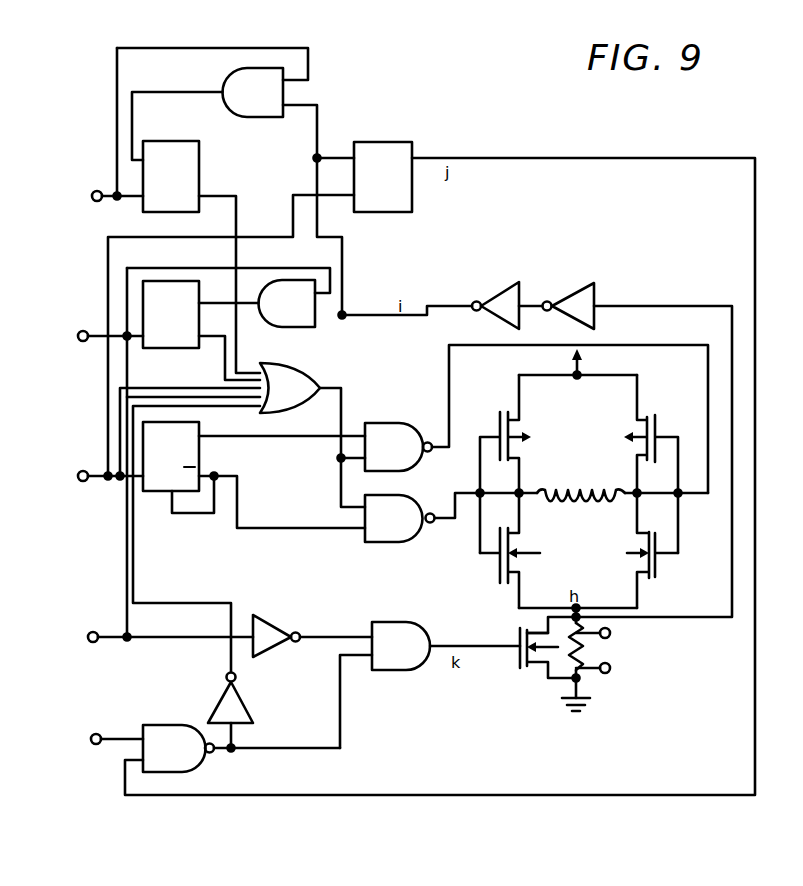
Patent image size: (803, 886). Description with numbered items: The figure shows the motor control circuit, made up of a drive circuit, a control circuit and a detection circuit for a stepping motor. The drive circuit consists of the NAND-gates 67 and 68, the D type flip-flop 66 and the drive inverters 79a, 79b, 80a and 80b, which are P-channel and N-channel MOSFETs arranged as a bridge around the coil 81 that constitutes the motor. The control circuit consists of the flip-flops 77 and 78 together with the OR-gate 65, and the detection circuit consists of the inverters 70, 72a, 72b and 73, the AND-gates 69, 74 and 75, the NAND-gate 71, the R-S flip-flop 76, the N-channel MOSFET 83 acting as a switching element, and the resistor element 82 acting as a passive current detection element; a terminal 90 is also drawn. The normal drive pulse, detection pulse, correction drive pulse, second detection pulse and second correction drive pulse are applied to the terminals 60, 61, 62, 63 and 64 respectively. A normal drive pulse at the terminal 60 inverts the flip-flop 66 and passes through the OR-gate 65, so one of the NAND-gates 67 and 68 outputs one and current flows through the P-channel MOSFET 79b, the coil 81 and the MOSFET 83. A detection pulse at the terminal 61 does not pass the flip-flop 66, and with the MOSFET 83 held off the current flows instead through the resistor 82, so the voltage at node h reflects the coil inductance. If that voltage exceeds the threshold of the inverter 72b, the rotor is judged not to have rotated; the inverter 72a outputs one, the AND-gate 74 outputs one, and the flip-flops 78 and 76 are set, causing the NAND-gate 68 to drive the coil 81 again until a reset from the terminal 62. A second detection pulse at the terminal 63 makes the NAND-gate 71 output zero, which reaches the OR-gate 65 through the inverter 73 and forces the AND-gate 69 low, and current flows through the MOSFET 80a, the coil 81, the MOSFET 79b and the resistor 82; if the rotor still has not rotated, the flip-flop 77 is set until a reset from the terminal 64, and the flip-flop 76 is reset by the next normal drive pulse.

The terminal 60 is at (95, 448).
The terminal 61 is at (100, 605).
The terminal 62 is at (97, 297).
The terminal 63 is at (112, 712).
The terminal 64 is at (97, 191).
The OR-gate 65 is at (322, 386).
The D type flip-flop 66 is at (200, 460).
The NAND-gate 67 is at (380, 425).
The NAND-gate 68 is at (399, 540).
The AND-gate 69 is at (415, 605).
The inverter 70 is at (260, 620).
The NAND-gate 71 is at (187, 705).
The inverter 72a is at (497, 296).
The inverter 72b is at (585, 290).
The inverter 73 is at (249, 712).
The AND-gate 74 is at (300, 327).
The AND-gate 75 is at (257, 68).
The R-S flip-flop 76 is at (380, 142).
The flip-flop 77 is at (169, 141).
The flip-flop 78 is at (175, 348).
The drive inverter 79a is at (499, 420).
The P-channel MOSFET 79b is at (498, 563).
The P-channel MOSFET 80a is at (657, 420).
The drive inverter 80b is at (654, 568).
The coil 81 is at (583, 488).
The resistor element 82 is at (600, 648).
The N-channel MOSFET 83 is at (521, 662).
The terminal 90 is at (605, 674).